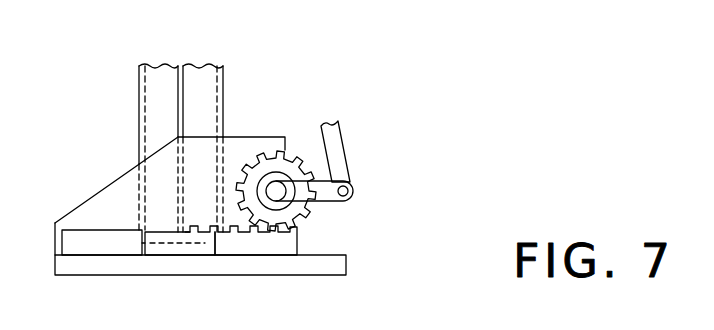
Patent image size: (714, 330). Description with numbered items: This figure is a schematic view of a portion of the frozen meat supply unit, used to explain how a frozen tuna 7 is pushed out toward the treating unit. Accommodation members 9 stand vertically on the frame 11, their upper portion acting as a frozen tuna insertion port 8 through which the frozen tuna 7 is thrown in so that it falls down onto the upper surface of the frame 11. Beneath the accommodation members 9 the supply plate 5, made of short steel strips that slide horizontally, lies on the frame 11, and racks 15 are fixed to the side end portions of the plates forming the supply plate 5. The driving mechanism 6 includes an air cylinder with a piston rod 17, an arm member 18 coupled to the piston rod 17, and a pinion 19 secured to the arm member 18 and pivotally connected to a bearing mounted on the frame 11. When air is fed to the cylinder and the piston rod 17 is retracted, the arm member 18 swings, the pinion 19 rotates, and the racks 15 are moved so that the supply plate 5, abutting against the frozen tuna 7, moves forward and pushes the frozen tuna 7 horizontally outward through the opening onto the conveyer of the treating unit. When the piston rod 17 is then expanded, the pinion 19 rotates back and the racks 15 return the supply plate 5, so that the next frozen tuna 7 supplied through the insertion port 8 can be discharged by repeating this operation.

The supply plate 5 is at (113, 247).
The driving mechanism 6 is at (338, 148).
The frozen tuna 7 is at (183, 257).
The frozen tuna insertion port 8 is at (183, 117).
The accommodation members 9 is at (200, 80).
The frame 11 is at (77, 266).
The racks 15 is at (280, 245).
The piston rod 17 is at (337, 150).
The arm member 18 is at (330, 199).
The pinion 19 is at (263, 158).